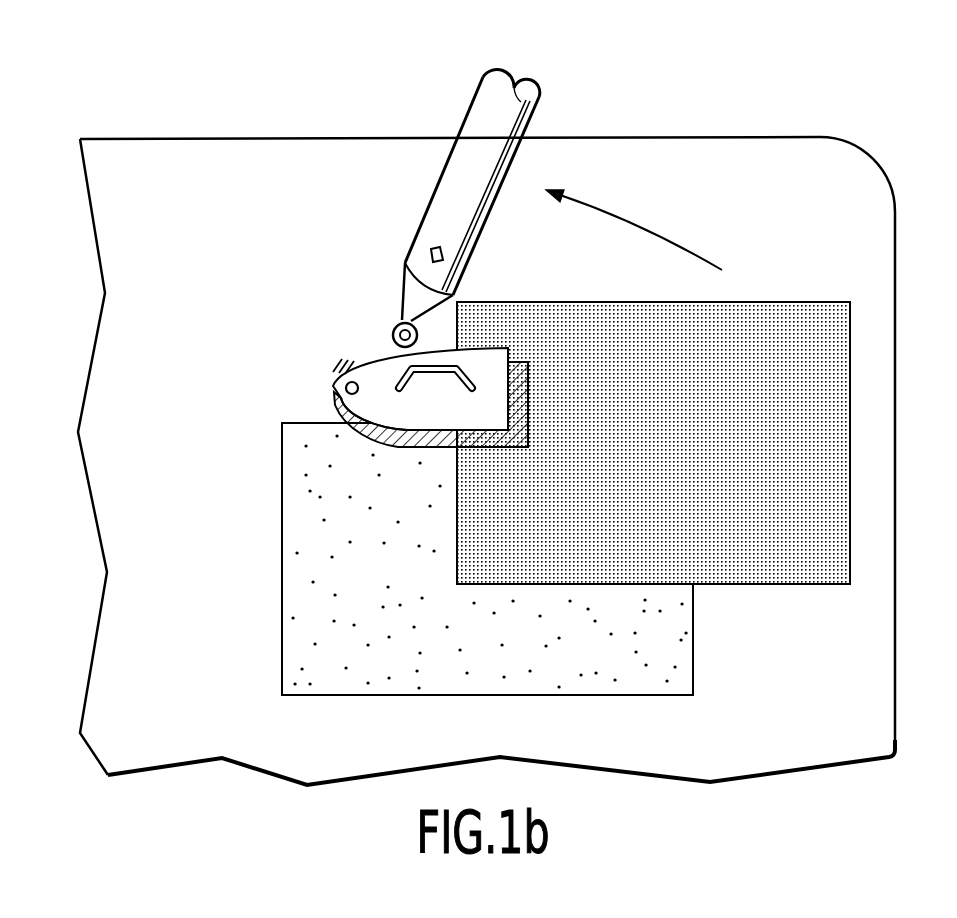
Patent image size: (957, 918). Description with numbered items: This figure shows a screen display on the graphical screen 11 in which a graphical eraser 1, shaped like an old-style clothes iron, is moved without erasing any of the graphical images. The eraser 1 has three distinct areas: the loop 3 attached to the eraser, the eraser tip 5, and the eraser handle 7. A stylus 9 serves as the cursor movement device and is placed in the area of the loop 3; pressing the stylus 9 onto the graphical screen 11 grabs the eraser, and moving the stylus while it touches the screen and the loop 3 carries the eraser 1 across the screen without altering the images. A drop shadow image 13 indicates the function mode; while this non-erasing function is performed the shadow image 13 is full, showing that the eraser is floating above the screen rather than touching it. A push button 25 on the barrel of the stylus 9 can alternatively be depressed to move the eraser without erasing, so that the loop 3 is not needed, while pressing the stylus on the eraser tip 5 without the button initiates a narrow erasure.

The graphical eraser 1 is at (376, 394).
The loop 3 is at (398, 321).
The eraser tip 5 is at (344, 384).
The eraser handle 7 is at (397, 378).
The stylus 9 is at (440, 194).
The graphical screen 11 is at (236, 146).
The drop shadow image 13 is at (395, 447).
The push button 25 is at (438, 247).